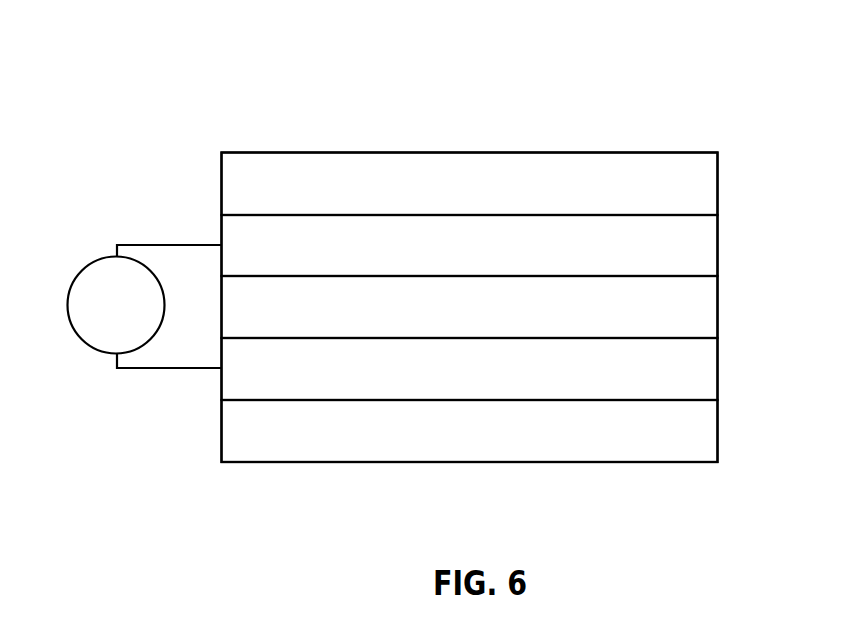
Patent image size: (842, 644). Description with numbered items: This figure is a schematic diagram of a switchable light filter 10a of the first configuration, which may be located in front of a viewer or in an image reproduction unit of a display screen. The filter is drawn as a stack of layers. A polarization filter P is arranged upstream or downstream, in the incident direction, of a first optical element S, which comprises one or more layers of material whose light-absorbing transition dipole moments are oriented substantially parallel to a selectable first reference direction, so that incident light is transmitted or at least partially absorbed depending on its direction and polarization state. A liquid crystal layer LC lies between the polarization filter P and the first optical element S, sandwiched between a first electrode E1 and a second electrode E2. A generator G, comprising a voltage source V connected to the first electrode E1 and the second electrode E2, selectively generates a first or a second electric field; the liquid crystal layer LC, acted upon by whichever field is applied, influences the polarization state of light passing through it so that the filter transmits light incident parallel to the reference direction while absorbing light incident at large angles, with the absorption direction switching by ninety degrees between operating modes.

The switchable light filter 10a is at (529, 136).
The polarization filter P is at (470, 184).
The first electrode E1 is at (470, 245).
The liquid crystal layer LC is at (470, 307).
The second electrode E2 is at (470, 369).
The first optical element S is at (470, 431).
The voltage source V is at (116, 305).
The generator G is at (172, 244).